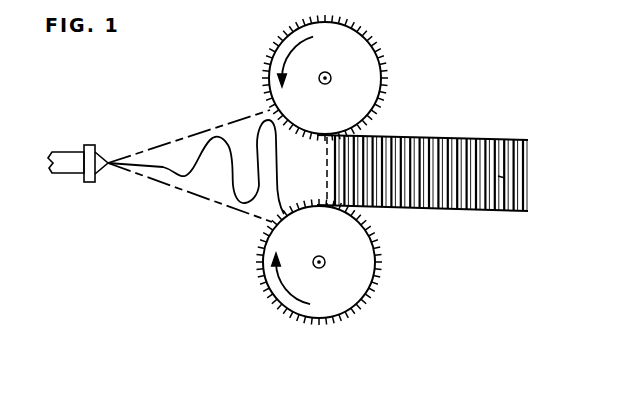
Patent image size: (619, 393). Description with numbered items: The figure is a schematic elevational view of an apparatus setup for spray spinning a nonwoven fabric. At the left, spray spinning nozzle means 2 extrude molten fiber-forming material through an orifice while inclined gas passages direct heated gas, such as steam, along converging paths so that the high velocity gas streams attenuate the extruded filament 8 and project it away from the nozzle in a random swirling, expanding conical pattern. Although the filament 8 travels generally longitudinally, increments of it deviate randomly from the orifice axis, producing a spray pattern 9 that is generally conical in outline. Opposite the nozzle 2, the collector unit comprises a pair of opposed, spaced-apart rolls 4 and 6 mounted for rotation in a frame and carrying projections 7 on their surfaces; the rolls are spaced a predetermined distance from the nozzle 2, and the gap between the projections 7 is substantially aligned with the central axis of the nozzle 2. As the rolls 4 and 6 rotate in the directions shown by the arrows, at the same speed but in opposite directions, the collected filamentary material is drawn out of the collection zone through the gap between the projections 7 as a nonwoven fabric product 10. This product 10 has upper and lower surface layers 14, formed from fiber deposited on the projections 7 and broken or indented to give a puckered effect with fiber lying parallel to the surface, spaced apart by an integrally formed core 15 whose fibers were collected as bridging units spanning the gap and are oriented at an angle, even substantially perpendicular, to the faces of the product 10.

The spray spinning nozzle means 2 is at (90, 183).
The roll 4 is at (365, 77).
The roll 6 is at (360, 277).
The projections 7 is at (370, 33).
The filament 8 is at (213, 137).
The spray pattern 9 is at (181, 191).
The nonwoven fabric product 10 is at (443, 167).
The surface layers 14 is at (430, 138).
The core 15 is at (498, 176).